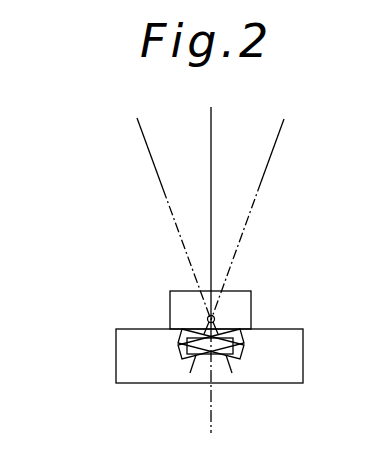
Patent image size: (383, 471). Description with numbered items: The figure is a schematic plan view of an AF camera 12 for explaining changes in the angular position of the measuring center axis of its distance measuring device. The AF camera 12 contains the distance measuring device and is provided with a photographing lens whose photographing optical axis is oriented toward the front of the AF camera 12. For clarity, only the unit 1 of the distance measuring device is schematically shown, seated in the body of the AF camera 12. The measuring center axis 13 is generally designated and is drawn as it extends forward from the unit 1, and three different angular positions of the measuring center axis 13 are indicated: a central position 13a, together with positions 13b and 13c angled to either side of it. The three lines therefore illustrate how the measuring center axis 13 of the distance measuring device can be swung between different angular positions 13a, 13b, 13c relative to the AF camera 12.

The unit 1 is at (185, 358).
The AF camera 12 is at (294, 354).
The measuring center axis 13 is at (140, 244).
The angular position of the measuring center axis 13a is at (213, 136).
The angular position of the measuring center axis 13b is at (162, 187).
The angular position of the measuring center axis 13c is at (262, 183).